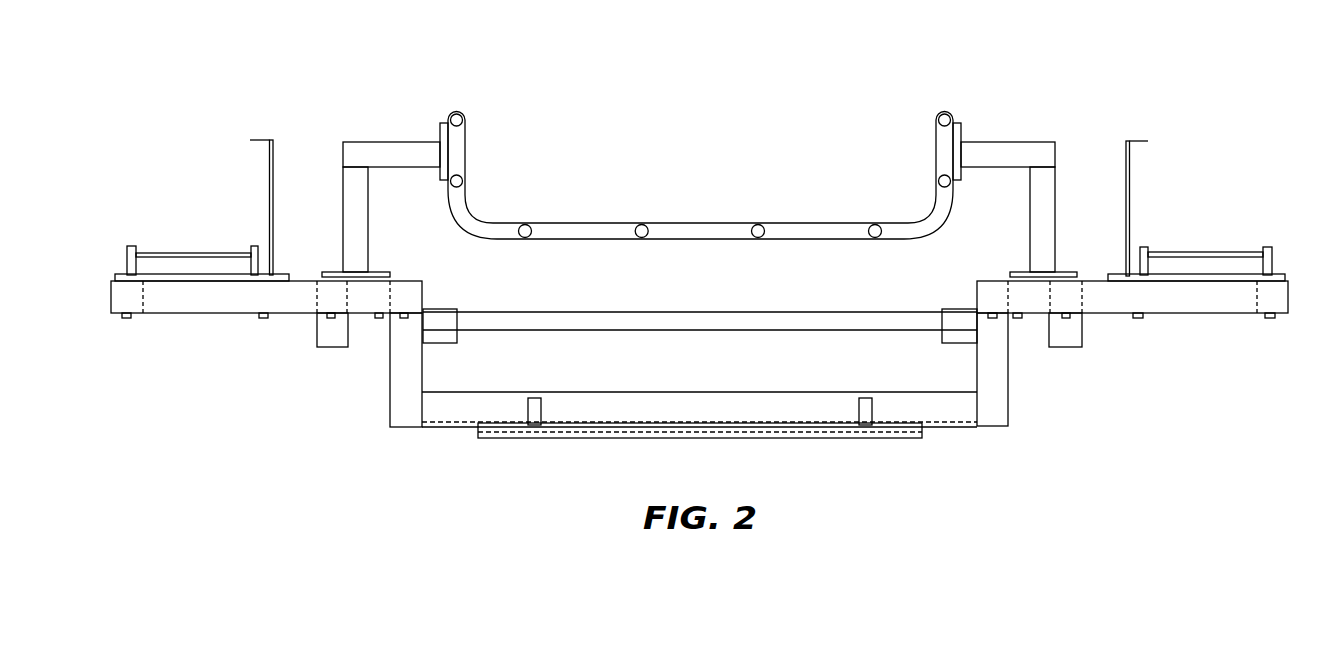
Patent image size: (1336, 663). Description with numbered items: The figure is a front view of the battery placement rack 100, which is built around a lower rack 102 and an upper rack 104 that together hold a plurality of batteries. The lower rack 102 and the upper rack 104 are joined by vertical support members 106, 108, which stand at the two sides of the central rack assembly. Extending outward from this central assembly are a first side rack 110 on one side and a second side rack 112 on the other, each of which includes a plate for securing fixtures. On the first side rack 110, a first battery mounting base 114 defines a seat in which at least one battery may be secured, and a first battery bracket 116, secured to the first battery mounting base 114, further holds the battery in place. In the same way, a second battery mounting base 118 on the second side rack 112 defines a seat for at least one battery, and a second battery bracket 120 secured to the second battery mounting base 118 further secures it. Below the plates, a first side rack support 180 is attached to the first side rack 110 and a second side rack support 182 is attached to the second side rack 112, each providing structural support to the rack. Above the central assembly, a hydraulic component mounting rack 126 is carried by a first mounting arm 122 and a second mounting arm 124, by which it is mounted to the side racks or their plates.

The battery placement rack 100 is at (1125, 43).
The lower rack 102 is at (945, 430).
The upper rack 104 is at (823, 332).
The vertical support member 106 is at (1010, 400).
The vertical support member 108 is at (390, 410).
The first side rack 110 is at (1290, 300).
The second side rack 112 is at (112, 300).
The first battery mounting base 114 is at (1145, 245).
The first battery bracket 116 is at (1128, 195).
The second battery mounting base 118 is at (130, 248).
The second battery bracket 120 is at (270, 188).
The first mounting arm 122 is at (378, 142).
The second mounting arm 124 is at (1023, 142).
The hydraulic component mounting rack 126 is at (628, 222).
The first side rack support 180 is at (1085, 340).
The second side rack support 182 is at (315, 333).